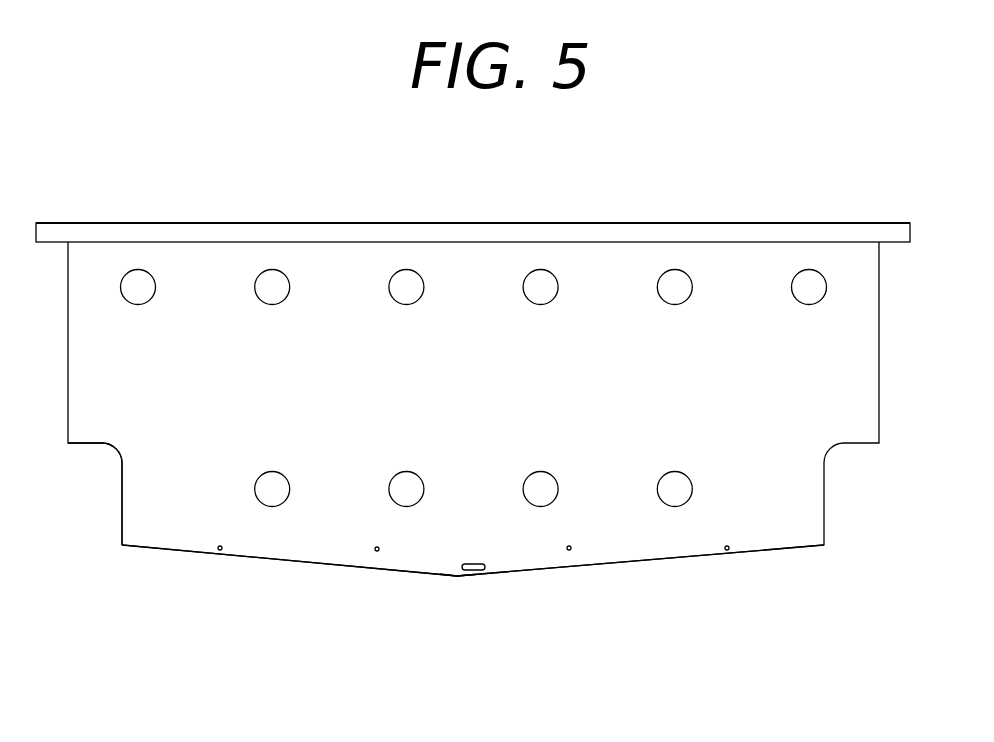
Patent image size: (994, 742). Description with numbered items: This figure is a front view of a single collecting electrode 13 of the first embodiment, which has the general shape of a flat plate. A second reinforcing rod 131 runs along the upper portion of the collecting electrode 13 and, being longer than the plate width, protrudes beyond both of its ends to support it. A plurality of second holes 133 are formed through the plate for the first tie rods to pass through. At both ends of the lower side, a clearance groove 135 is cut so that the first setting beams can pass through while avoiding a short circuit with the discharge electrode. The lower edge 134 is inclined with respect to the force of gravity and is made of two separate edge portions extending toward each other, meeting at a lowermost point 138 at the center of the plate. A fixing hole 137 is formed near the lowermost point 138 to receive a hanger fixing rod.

The collecting electrode 13 is at (566, 196).
The second reinforcing rod 131 is at (452, 233).
The second holes 133 is at (670, 490).
The lower edge 134 is at (270, 559).
The clearance groove 135 is at (122, 500).
The fixing hole 137 is at (463, 567).
The lowermost point 138 is at (472, 578).